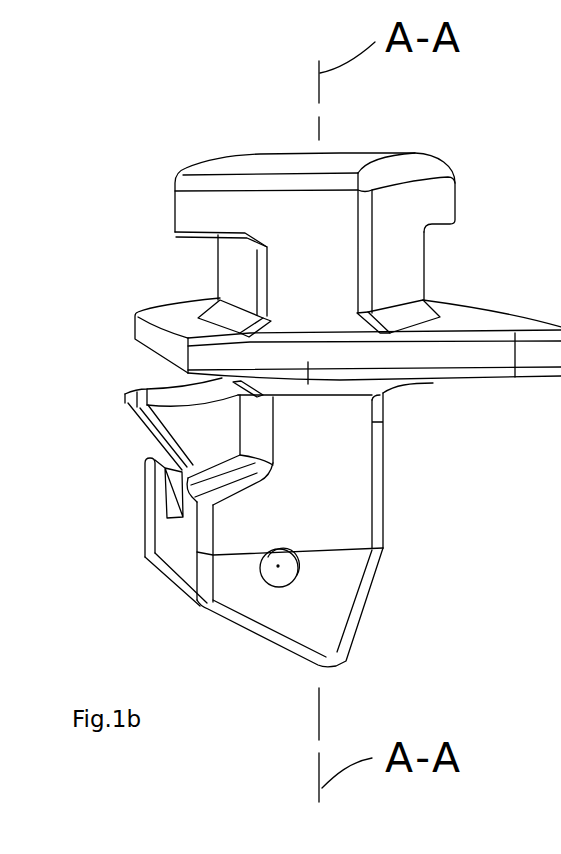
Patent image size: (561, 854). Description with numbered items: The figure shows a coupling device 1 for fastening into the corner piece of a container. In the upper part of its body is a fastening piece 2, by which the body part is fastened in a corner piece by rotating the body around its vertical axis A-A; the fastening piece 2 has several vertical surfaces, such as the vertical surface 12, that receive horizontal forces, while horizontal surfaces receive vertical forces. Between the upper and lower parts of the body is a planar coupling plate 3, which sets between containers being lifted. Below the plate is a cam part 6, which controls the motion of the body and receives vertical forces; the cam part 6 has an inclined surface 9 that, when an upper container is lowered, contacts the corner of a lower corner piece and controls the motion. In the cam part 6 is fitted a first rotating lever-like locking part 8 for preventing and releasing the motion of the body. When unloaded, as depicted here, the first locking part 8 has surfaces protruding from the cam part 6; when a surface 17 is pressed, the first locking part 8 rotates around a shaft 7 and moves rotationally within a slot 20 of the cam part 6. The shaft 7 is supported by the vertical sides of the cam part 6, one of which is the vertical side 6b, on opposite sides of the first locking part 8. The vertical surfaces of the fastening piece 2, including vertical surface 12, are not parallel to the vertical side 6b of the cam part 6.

The coupling device 1 is at (366, 130).
The fastening piece 2 is at (406, 211).
The coupling plate 3 is at (515, 318).
The cam part 6 is at (269, 526).
The vertical side of the cam part 6b is at (341, 498).
The shaft 7 is at (293, 571).
The first lever-like locking part 8 is at (175, 428).
The inclined surface 9 is at (218, 477).
The vertical surface 12 is at (233, 270).
The surface 17 is at (139, 417).
The slot 20 is at (173, 507).